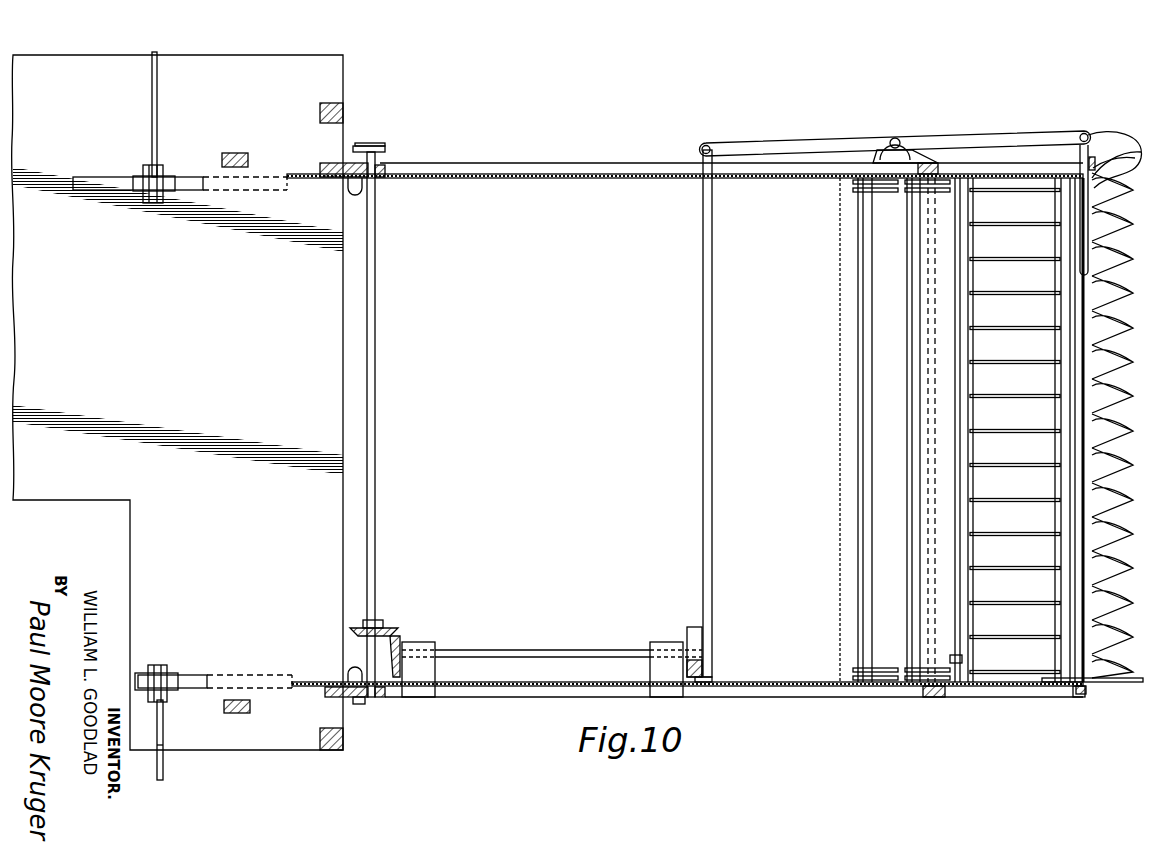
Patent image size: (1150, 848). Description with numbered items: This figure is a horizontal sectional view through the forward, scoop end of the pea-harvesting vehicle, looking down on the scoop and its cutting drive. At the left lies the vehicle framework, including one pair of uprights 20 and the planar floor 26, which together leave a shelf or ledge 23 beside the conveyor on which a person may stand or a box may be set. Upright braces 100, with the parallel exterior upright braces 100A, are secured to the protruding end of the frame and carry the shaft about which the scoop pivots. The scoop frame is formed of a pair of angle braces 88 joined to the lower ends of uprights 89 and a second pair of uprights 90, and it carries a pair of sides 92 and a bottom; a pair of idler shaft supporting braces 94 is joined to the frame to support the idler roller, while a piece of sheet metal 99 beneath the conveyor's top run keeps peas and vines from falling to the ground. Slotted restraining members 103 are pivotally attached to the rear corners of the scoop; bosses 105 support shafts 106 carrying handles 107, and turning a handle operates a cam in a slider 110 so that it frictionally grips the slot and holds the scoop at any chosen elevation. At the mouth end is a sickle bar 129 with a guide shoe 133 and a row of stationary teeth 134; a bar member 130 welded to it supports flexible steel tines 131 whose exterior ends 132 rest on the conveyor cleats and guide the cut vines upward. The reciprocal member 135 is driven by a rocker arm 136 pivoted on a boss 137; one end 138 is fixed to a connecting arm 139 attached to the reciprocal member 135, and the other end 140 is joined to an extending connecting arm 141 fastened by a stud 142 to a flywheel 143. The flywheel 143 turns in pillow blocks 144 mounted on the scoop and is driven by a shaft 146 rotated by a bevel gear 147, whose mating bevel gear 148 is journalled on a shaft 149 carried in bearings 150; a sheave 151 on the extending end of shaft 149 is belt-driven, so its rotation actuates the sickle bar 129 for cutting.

The uprights 20 is at (240, 152).
The shelf or ledge 23 is at (345, 68).
The planar floor 26 is at (134, 364).
The angle braces 88 is at (527, 163).
The uprights 89 is at (1089, 160).
The uprights 90 is at (366, 145).
The sides 92 is at (541, 179).
The idler shaft supporting braces 94 is at (935, 163).
The sheet metal 99 is at (839, 497).
The upright braces 100 is at (330, 163).
The upright braces 100A is at (343, 106).
The restraining members 103 is at (197, 178).
The bosses 105 is at (160, 166).
The shafts 106 is at (157, 100).
The handles 107 is at (163, 770).
The slider 110 is at (168, 177).
The sickle bar 129 is at (1103, 650).
The bar member 130 is at (1078, 698).
The flexible steel tines 131 is at (1036, 300).
The exterior end 132 is at (958, 663).
The guide shoe 133 is at (1112, 152).
The stationary teeth 134 is at (1122, 395).
The reciprocal member 135 is at (1107, 137).
The rocker arm 136 is at (998, 131).
The boss 137 is at (900, 131).
The one end of rocker arm 138 is at (1085, 132).
The connecting arm 139 is at (1116, 160).
The other end of rocker arm 140 is at (727, 143).
The extending connecting arm 141 is at (713, 360).
The stud 142 is at (703, 688).
The flywheel 143 is at (694, 627).
The pillow blocks 144 is at (432, 644).
The shaft 146 is at (570, 650).
The bevel gear 147 is at (403, 648).
The mating bevel gear 148 is at (388, 628).
The shaft 149 is at (376, 433).
The bearings 150 is at (385, 168).
The sheave 151 is at (383, 144).